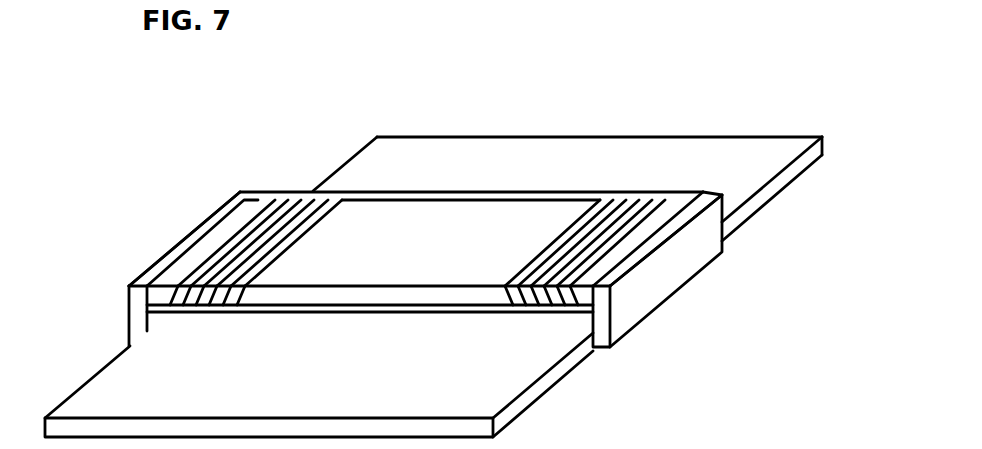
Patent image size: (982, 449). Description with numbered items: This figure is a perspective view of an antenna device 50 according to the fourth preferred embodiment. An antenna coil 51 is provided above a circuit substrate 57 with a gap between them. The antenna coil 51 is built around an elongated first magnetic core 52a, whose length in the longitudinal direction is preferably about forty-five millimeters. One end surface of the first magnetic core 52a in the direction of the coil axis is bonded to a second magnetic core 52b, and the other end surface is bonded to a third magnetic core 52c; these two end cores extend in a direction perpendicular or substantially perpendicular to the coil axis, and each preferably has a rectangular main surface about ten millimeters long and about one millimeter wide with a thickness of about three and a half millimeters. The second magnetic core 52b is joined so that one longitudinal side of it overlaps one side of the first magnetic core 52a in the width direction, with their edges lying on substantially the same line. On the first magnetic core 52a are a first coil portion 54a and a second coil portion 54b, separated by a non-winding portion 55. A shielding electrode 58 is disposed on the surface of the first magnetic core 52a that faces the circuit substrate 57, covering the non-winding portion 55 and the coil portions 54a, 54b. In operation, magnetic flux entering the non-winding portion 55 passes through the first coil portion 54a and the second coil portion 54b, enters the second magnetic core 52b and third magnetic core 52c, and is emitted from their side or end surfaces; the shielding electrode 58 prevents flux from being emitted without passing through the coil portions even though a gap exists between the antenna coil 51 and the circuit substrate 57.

The antenna device 50 is at (137, 41).
The antenna coil 51 is at (285, 191).
The first magnetic core 52a is at (398, 220).
The second magnetic core 52b is at (216, 212).
The third magnetic core 52c is at (665, 228).
The first coil portion 54a is at (235, 318).
The second coil portion 54b is at (577, 318).
The non-winding portion 55 is at (435, 256).
The circuit substrate 57 is at (698, 163).
The shielding electrode 58 is at (157, 323).